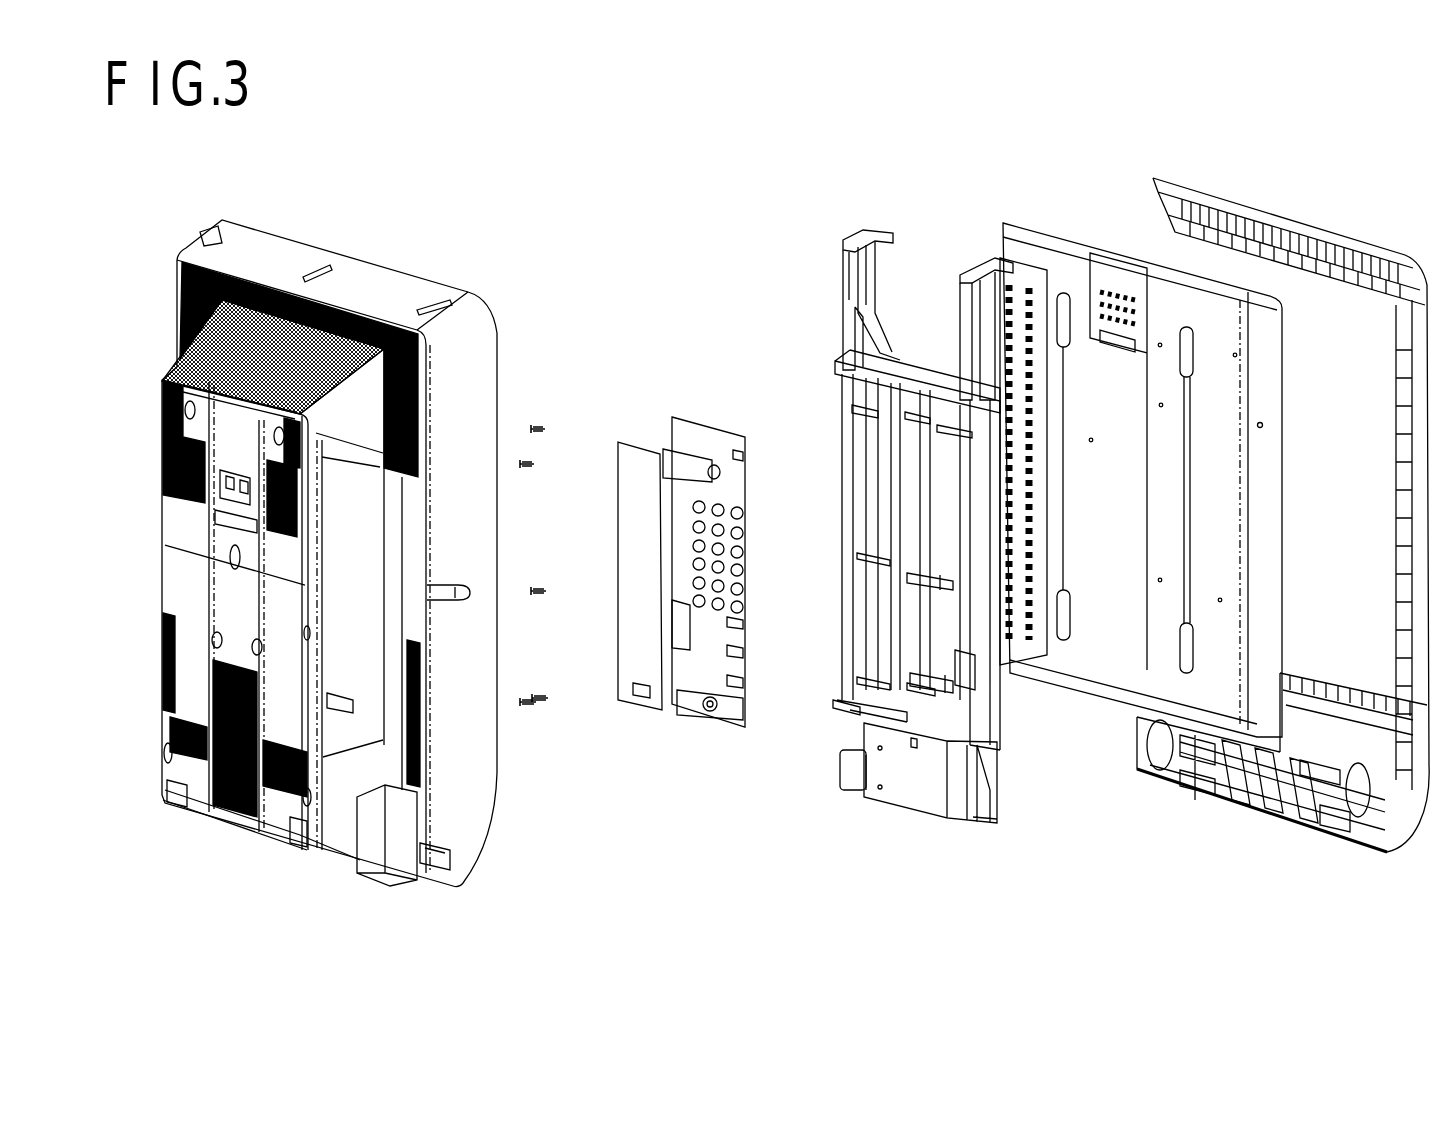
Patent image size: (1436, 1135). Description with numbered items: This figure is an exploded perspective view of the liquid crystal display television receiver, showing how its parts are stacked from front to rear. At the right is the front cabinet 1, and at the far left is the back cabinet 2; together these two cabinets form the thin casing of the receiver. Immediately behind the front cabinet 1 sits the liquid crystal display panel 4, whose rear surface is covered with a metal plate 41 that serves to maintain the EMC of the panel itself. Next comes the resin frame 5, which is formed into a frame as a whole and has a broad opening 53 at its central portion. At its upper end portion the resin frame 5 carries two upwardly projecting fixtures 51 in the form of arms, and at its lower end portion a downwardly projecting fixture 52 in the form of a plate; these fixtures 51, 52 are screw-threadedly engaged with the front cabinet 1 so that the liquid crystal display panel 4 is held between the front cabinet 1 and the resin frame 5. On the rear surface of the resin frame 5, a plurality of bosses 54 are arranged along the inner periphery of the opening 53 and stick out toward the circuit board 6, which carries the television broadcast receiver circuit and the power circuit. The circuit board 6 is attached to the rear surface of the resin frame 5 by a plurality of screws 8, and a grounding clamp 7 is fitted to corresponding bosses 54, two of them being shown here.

The front cabinet 1 is at (1333, 232).
The back cabinet 2 is at (397, 280).
The liquid crystal display panel 4 is at (1177, 480).
The metal plate 41 is at (1160, 517).
The resin frame 5 is at (847, 398).
The upwardly projecting fixture 51 is at (862, 229).
The downwardly projecting fixture 52 is at (908, 790).
The opening 53 is at (963, 653).
The boss 54 is at (857, 423).
The circuit board 6 is at (673, 668).
The grounding clamp 7 is at (937, 600).
The screw 8 is at (537, 425).